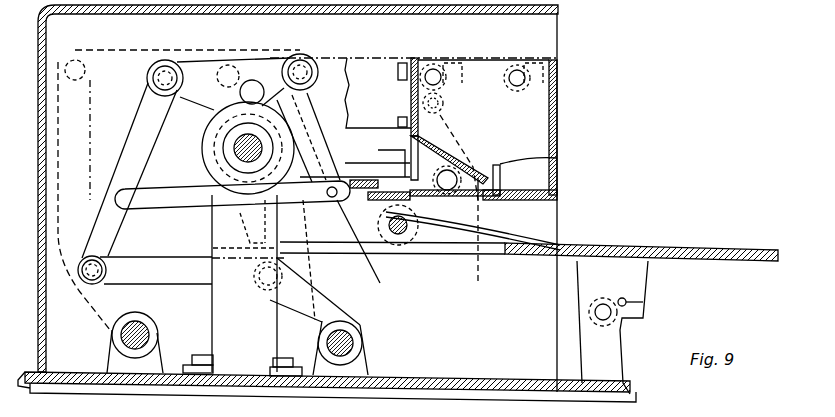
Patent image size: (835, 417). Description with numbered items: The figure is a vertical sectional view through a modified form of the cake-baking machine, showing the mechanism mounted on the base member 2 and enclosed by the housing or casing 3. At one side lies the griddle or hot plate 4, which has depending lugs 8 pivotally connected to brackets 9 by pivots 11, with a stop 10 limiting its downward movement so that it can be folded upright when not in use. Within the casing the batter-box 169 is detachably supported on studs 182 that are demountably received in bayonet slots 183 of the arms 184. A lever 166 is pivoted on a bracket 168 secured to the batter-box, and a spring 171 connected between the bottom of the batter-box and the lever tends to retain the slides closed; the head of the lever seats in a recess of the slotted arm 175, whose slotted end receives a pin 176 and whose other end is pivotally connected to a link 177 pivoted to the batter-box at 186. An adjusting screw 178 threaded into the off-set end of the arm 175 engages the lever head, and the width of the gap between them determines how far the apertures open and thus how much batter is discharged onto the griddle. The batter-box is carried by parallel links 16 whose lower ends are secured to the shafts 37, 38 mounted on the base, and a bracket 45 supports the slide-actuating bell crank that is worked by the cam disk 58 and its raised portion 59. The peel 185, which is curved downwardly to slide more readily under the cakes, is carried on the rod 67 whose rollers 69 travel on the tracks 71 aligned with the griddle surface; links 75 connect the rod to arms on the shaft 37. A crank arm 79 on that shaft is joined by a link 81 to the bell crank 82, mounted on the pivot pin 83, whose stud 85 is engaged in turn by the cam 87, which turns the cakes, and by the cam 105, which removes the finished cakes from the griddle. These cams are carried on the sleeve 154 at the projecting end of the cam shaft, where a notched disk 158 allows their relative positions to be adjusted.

The base member 2 is at (62, 385).
The housing or casing 3 is at (39, 318).
The griddle or hot plate 4 is at (718, 250).
The depending lug 8 is at (645, 282).
The bracket 9 is at (622, 362).
The stop 10 is at (620, 298).
The pivot 11 is at (597, 315).
The parallel link 16 is at (96, 304).
The shaft 37 is at (362, 345).
The shaft 38 is at (128, 341).
The bracket 45 is at (217, 322).
The cam disk 58 is at (242, 239).
The raised portion 59 is at (296, 120).
The rod 67 is at (410, 232).
The roller 69 is at (399, 240).
The track 71 is at (528, 257).
The link 75 is at (342, 148).
The crank arm 79 is at (307, 323).
The link 81 is at (143, 278).
The bell crank 82 is at (112, 175).
The pivot pin 83 is at (165, 68).
The stud 85 is at (228, 65).
The raised portion or cam 87 is at (186, 158).
The cam 105 is at (216, 250).
The sleeve 154 is at (275, 411).
The notched disk 158 is at (198, 411).
The lever 166 is at (455, 205).
The bracket 168 is at (408, 157).
The batter-box 169 is at (540, 107).
The spring 171 is at (452, 199).
The slotted arm 175 is at (160, 214).
The pin 176 is at (367, 251).
The link 177 is at (455, 125).
The adjusting screw 178 is at (502, 160).
The stud 182 is at (433, 68).
The bayonet slot 183 is at (457, 60).
The arm 184 is at (374, 60).
The peel 185 is at (586, 212).
The pivot of link to batter-box 186 is at (444, 103).